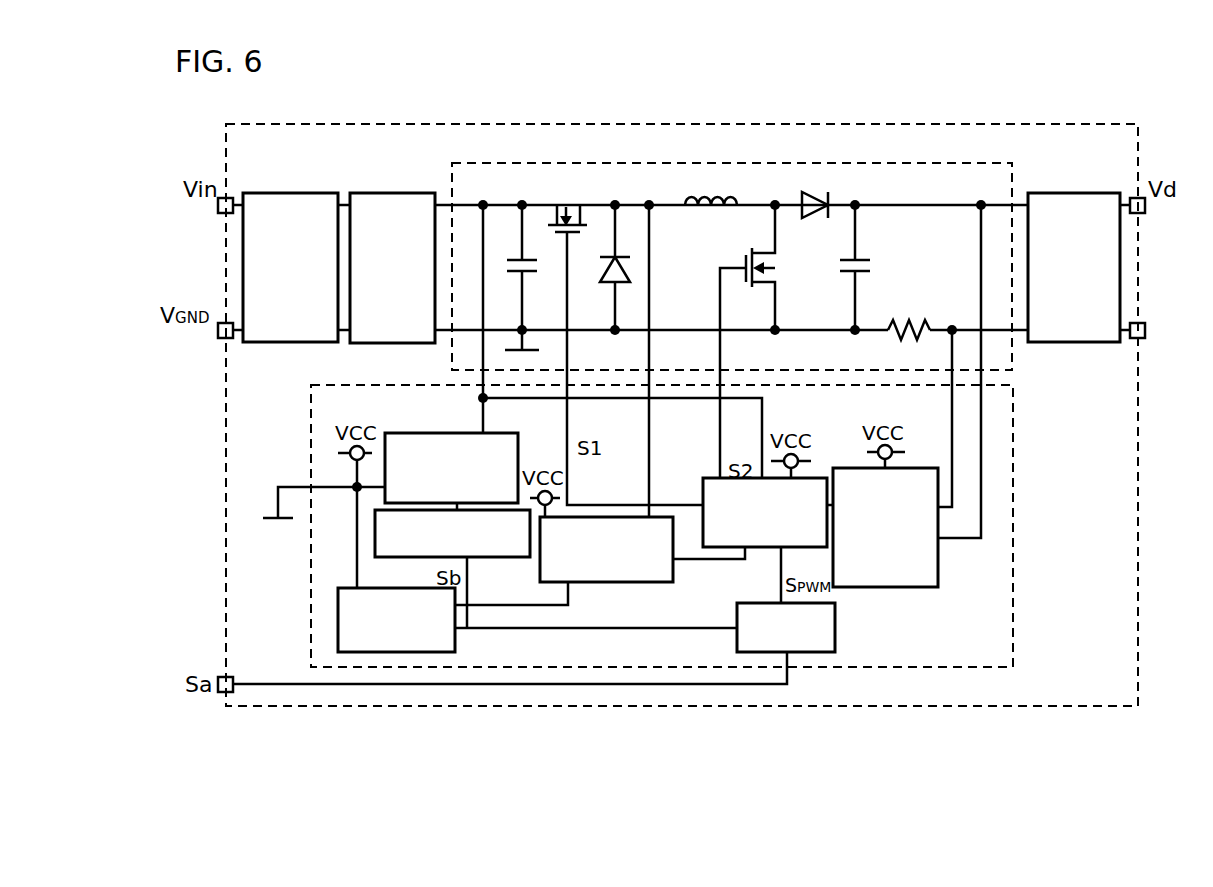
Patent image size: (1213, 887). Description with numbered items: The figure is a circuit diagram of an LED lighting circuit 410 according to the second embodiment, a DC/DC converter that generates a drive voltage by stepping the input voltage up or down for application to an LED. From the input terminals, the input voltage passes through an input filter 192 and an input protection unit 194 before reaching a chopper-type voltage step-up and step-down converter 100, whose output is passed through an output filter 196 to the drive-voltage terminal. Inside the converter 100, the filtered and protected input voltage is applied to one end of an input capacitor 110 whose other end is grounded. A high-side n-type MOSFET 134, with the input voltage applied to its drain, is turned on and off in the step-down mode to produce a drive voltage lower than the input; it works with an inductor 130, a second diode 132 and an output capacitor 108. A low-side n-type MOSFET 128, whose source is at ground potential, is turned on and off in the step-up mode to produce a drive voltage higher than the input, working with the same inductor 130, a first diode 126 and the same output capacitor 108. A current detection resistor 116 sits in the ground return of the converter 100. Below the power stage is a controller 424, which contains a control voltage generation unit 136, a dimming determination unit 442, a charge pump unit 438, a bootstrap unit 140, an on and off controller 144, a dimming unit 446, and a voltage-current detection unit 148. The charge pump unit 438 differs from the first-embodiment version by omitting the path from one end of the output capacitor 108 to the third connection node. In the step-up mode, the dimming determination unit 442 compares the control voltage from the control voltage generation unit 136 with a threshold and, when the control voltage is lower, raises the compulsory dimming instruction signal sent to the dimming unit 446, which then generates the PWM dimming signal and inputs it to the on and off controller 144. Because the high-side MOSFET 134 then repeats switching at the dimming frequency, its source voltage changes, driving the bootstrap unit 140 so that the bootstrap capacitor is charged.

The voltage step-up and step-down converter 100 is at (988, 165).
The output capacitor 108 is at (868, 262).
The input capacitor 110 is at (507, 262).
The current detection resistor 116 is at (912, 327).
The first diode 126 is at (818, 195).
The low-side n-type MOSFET 128 is at (780, 263).
The inductor 130 is at (737, 200).
The second diode 132 is at (630, 272).
The high-side n-type MOSFET 134 is at (565, 200).
The control voltage generation unit 136 is at (430, 433).
The bootstrap unit 140 is at (613, 582).
The on and off controller 144 is at (713, 547).
The voltage-current detection unit 148 is at (940, 572).
The input filter 192 is at (280, 193).
The input protection unit 194 is at (382, 193).
The output filter 196 is at (1086, 193).
The LED lighting circuit 410 is at (1138, 665).
The controller 424 is at (1013, 650).
The charge pump unit 438 is at (350, 588).
The dimming determination unit 442 is at (487, 560).
The dimming unit 446 is at (835, 612).